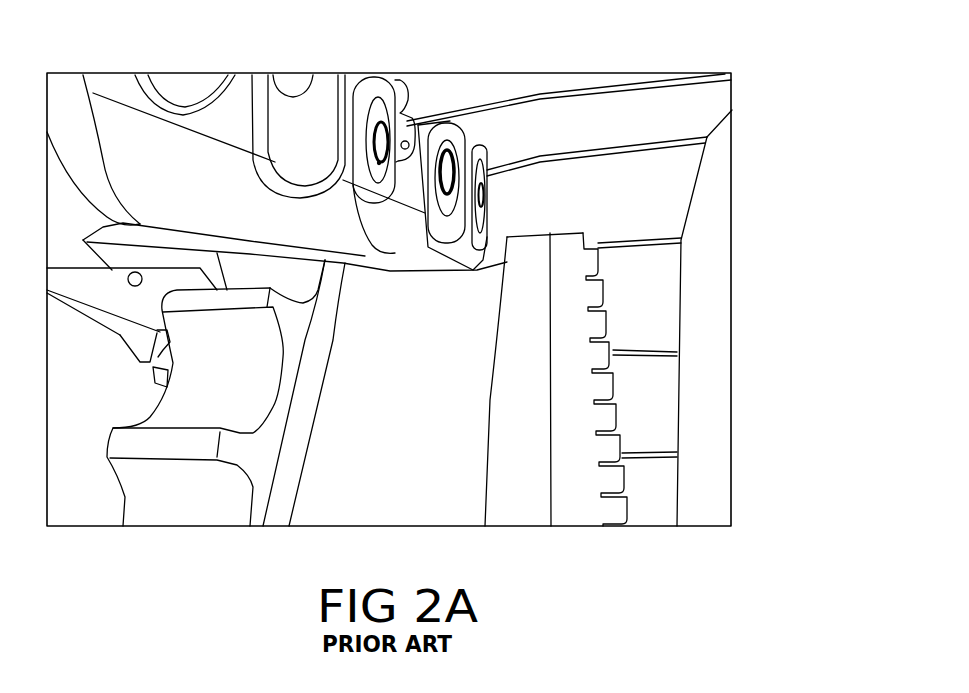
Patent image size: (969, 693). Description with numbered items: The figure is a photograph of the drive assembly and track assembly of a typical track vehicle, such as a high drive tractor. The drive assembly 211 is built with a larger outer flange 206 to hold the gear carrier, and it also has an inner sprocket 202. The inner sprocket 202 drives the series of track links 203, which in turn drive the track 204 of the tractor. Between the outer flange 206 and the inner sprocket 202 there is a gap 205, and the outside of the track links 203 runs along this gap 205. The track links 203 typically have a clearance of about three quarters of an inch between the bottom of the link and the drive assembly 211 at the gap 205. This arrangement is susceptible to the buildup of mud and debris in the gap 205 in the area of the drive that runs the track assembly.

The inner sprocket 202 is at (253, 462).
The track links 203 is at (447, 178).
The track 204 is at (377, 80).
The gap 205 is at (426, 496).
The outer flange 206 is at (552, 332).
The drive assembly 211 is at (540, 263).